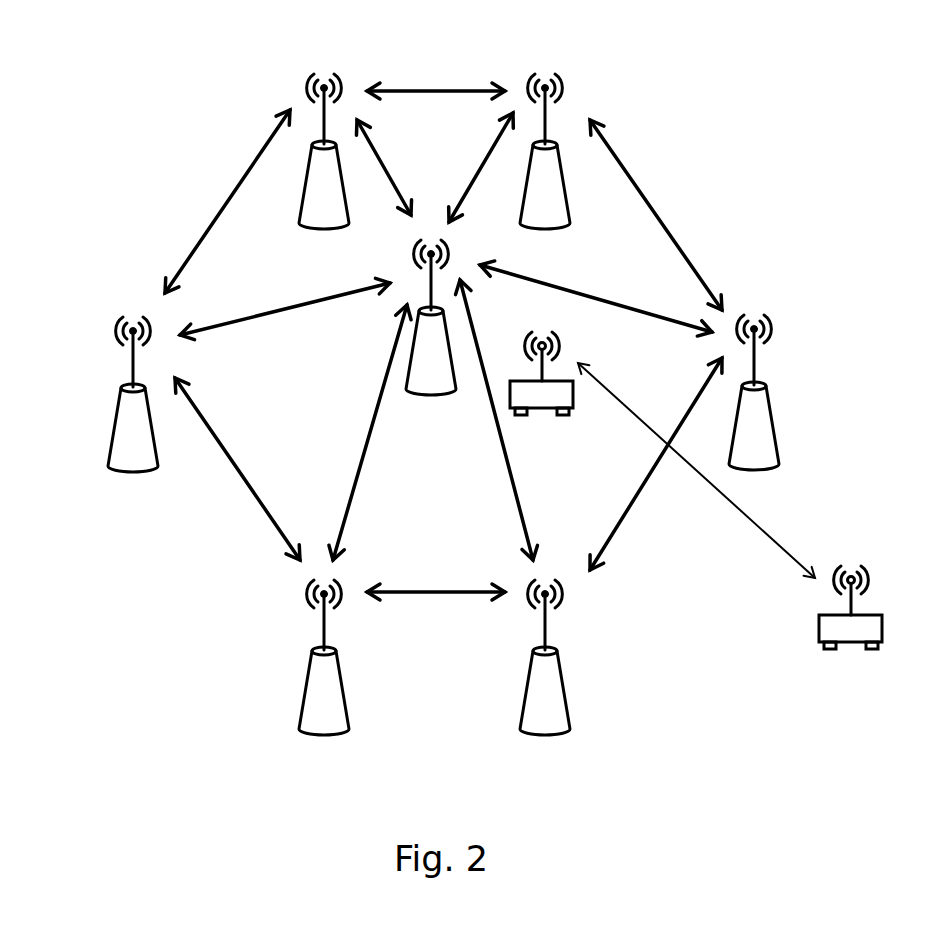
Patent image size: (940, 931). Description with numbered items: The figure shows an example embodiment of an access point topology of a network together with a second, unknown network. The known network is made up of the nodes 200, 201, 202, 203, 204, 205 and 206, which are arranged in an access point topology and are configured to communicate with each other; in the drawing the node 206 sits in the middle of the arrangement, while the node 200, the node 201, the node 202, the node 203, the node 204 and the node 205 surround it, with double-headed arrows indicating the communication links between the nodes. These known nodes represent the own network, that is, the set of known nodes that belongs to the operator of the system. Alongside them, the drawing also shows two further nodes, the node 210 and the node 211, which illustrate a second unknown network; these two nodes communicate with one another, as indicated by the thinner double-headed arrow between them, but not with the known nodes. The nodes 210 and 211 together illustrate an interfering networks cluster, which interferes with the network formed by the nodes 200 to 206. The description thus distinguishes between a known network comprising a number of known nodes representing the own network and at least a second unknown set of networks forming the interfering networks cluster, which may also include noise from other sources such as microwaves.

The node 200 is at (98, 388).
The node 201 is at (300, 50).
The node 202 is at (597, 82).
The node 203 is at (796, 302).
The node 204 is at (283, 697).
The node 205 is at (585, 695).
The node 206 is at (421, 413).
The node 210 is at (545, 430).
The node 211 is at (873, 550).